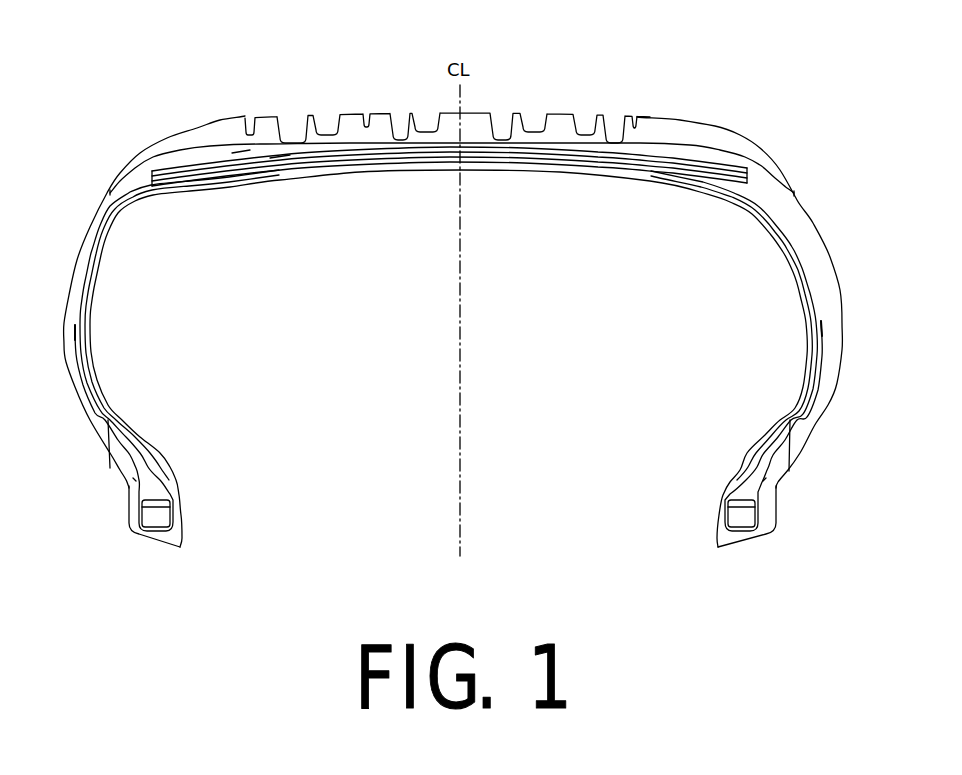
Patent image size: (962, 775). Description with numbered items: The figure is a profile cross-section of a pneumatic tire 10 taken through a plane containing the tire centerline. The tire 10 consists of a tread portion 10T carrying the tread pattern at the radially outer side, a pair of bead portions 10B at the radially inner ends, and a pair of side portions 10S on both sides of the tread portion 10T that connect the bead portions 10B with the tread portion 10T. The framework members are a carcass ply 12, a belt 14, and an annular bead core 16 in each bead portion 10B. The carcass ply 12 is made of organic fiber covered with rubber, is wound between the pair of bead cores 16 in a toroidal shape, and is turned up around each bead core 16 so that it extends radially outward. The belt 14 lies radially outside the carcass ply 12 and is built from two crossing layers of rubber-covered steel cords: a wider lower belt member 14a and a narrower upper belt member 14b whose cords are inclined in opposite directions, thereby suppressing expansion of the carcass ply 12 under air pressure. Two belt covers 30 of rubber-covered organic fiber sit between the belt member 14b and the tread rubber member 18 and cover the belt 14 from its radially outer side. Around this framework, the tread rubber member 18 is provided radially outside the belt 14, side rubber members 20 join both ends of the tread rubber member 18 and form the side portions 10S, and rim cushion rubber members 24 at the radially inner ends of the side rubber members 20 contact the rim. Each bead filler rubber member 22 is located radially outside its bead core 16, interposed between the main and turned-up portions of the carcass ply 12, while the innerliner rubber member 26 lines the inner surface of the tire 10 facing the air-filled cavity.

The tire 10 is at (784, 66).
The tread portion 10T is at (724, 107).
The side portions 10S is at (60, 309).
The bead portions 10B is at (136, 544).
The carcass ply 12 is at (237, 184).
The belt 14 is at (333, 223).
The belt member 14a is at (272, 178).
The belt member 14b is at (315, 158).
The bead core 16 is at (735, 517).
The tread rubber member 18 is at (633, 128).
The side rubber members 20 is at (815, 273).
The bead filler rubber members 22 is at (748, 472).
The rim cushion rubber members 24 is at (770, 493).
The innerliner rubber member 26 is at (210, 185).
The belt covers 30 is at (275, 157).